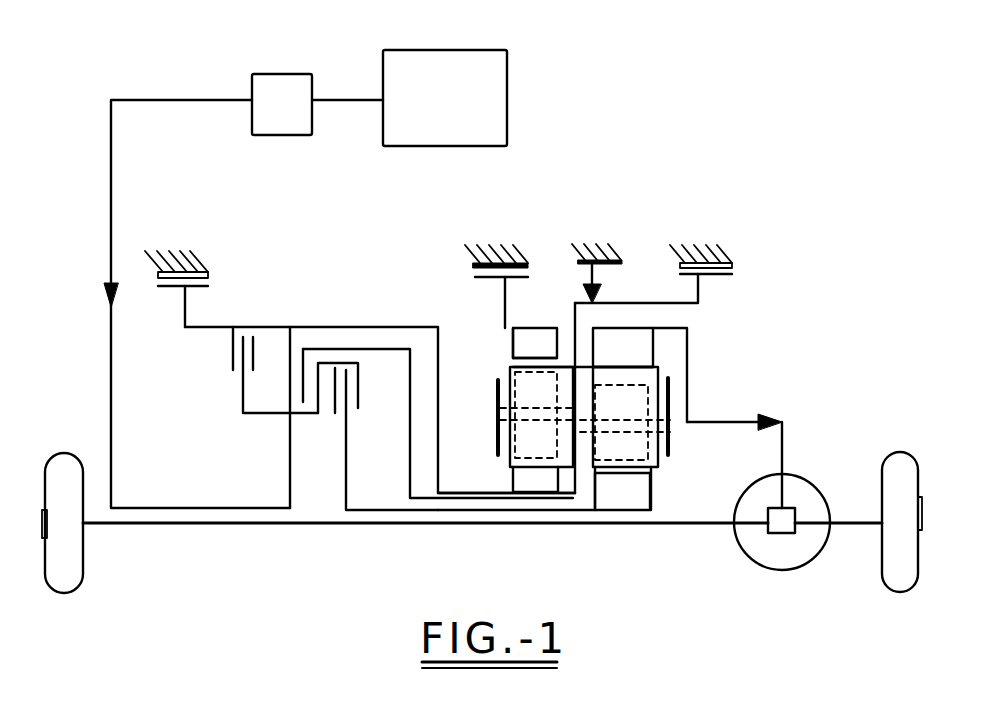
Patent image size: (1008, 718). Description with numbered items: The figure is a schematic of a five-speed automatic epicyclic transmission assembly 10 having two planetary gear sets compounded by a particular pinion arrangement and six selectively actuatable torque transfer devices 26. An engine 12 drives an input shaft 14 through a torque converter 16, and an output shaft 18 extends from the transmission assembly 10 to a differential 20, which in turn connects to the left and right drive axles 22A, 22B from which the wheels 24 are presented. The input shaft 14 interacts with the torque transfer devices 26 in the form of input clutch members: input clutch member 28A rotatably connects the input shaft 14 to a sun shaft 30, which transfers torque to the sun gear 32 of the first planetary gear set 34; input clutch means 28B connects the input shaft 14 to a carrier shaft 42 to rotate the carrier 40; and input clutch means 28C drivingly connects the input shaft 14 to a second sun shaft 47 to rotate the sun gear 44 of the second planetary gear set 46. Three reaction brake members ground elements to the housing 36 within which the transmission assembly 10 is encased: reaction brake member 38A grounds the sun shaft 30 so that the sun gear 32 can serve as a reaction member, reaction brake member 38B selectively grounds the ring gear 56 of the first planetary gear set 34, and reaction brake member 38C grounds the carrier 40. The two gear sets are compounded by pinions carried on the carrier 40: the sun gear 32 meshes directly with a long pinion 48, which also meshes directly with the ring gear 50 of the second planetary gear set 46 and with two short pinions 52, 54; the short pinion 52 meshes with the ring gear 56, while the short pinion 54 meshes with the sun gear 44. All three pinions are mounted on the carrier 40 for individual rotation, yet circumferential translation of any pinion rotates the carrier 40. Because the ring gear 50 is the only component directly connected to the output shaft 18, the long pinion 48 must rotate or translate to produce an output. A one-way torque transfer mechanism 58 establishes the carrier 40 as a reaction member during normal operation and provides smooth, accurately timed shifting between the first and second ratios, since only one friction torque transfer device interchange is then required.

The transmission assembly 10 is at (642, 160).
The engine 12 is at (507, 70).
The input shaft 14 is at (183, 507).
The torque converter 16 is at (278, 74).
The output shaft 18 is at (745, 422).
The differential 20 is at (783, 533).
The left drive axle 22A is at (280, 523).
The right drive axle 22B is at (862, 521).
The wheels 24 is at (82, 468).
The torque transfer devices 26 is at (733, 251).
The input clutch member 28A is at (233, 352).
The input clutch means 28B is at (288, 374).
The input clutch means 28C is at (360, 392).
The sun shaft 30 is at (481, 493).
The sun gear 32 is at (537, 486).
The first planetary gear set 34 is at (543, 326).
The housing 36 is at (178, 251).
The reaction brake member 38A is at (207, 275).
The reaction brake member 38B is at (473, 265).
The reaction brake member 38C is at (732, 264).
The carrier 40 is at (578, 487).
The carrier shaft 42 is at (483, 510).
The sun gear 44 is at (647, 492).
The second planetary gear set 46 is at (657, 303).
The second sun shaft 47 is at (385, 508).
The long pinion 48 is at (517, 374).
The ring gear 50 is at (632, 333).
The short pinion 52 is at (513, 358).
The short pinion 54 is at (652, 473).
The ring gear 56 is at (513, 332).
The one-way torque transfer mechanism 58 is at (597, 290).